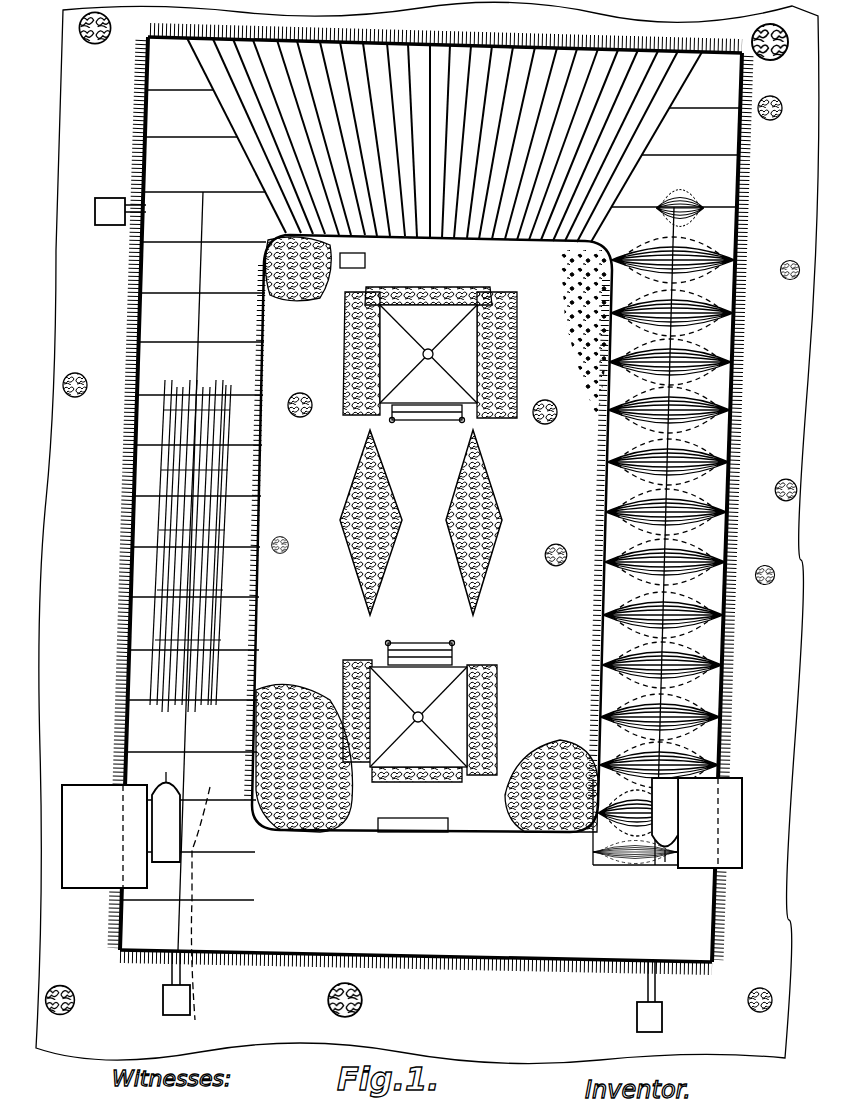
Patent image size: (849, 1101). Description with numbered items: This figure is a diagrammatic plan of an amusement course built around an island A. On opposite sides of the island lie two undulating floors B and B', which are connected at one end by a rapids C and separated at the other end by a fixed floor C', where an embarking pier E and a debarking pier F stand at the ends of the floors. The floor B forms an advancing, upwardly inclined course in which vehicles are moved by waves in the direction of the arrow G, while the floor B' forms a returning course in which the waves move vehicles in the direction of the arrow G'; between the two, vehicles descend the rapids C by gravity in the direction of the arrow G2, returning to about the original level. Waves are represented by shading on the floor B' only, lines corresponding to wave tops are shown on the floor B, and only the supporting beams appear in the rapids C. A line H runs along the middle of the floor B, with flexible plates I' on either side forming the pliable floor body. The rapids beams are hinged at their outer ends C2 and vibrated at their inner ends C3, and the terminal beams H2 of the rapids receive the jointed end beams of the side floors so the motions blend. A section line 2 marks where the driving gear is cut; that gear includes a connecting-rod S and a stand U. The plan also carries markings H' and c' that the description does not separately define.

The outer ends of the rapids floor-beams C2 is at (445, 29).
The rapids C is at (444, 140).
The terminal beams of the rapids H2 is at (688, 100).
The right side plots H' is at (675, 161).
The stand U is at (163, 1000).
The connecting-rod S is at (165, 968).
The line along the middle of the floor H is at (442, 527).
The flexible plates I' is at (189, 520).
The undulating floor B is at (120, 493).
The undulating floor B' is at (726, 507).
The arrow G is at (288, 517).
The island A is at (430, 533).
The arrow G' is at (570, 518).
The water tanks c' is at (415, 817).
The embarking pier E is at (104, 836).
The debarking pier F is at (667, 823).
The section line 2 is at (205, 900).
The fixed floor C' is at (470, 890).
The arrow G2 is at (457, 259).
The inner ends of the rapids floor-beams C3 is at (549, 329).